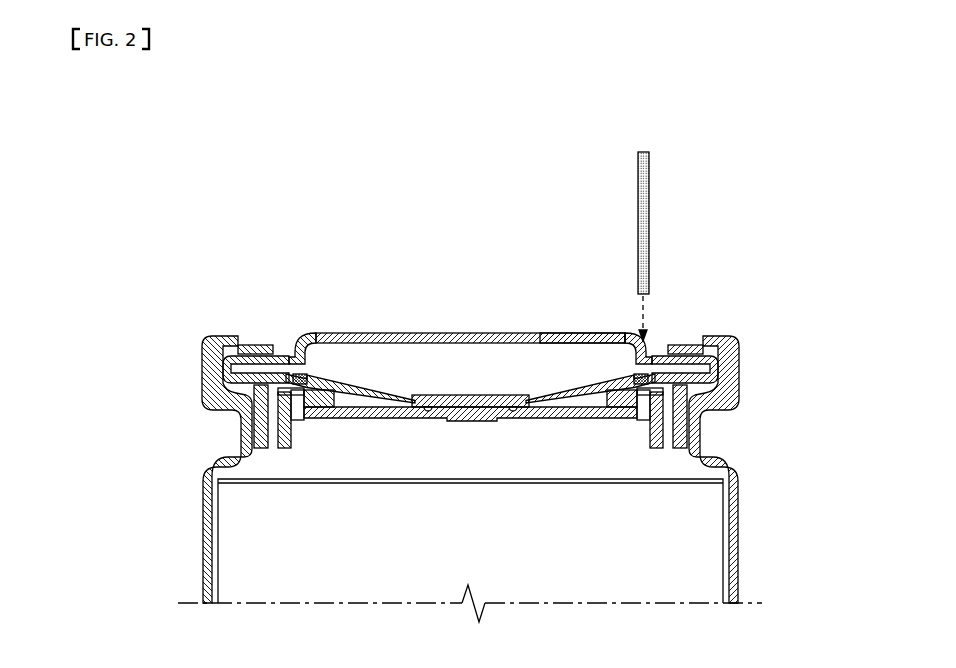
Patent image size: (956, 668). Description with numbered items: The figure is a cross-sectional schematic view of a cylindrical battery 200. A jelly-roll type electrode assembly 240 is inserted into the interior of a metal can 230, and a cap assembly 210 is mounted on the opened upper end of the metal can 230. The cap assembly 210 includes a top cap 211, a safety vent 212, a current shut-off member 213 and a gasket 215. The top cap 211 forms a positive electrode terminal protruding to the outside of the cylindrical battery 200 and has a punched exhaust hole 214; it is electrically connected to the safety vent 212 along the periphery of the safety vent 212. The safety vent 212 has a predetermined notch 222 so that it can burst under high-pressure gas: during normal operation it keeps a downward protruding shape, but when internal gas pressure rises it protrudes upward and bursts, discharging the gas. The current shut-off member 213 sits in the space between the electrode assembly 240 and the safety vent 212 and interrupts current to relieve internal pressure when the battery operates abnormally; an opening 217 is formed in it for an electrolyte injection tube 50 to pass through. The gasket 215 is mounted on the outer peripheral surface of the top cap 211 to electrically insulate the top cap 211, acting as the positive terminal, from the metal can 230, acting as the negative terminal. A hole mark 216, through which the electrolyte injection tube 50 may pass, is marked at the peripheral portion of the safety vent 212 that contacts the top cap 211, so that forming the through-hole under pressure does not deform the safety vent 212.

The cylindrical battery 200 is at (203, 168).
The cap assembly 210 is at (314, 259).
The top cap 211 is at (455, 333).
The safety vent 212 is at (580, 337).
The current shut-off member 213 is at (366, 415).
The exhaust hole 214 is at (293, 348).
The gasket 215 is at (218, 372).
The hole mark 216 is at (677, 398).
The opening 217 is at (698, 436).
The notch 222 is at (413, 397).
The metal can 230 is at (205, 509).
The electrode assembly 240 is at (240, 563).
The electrolyte injection tube 50 is at (649, 203).